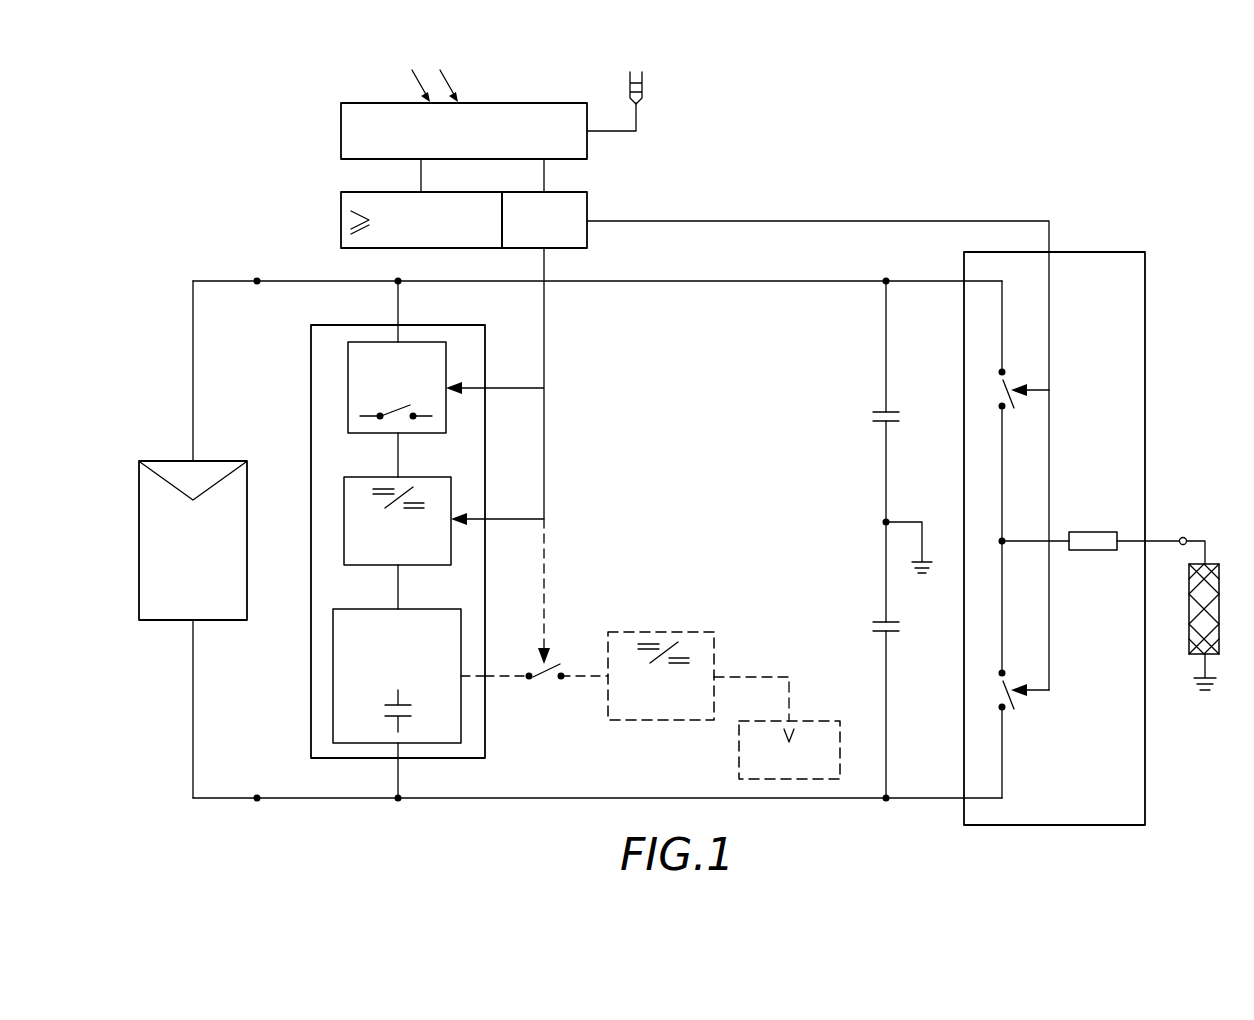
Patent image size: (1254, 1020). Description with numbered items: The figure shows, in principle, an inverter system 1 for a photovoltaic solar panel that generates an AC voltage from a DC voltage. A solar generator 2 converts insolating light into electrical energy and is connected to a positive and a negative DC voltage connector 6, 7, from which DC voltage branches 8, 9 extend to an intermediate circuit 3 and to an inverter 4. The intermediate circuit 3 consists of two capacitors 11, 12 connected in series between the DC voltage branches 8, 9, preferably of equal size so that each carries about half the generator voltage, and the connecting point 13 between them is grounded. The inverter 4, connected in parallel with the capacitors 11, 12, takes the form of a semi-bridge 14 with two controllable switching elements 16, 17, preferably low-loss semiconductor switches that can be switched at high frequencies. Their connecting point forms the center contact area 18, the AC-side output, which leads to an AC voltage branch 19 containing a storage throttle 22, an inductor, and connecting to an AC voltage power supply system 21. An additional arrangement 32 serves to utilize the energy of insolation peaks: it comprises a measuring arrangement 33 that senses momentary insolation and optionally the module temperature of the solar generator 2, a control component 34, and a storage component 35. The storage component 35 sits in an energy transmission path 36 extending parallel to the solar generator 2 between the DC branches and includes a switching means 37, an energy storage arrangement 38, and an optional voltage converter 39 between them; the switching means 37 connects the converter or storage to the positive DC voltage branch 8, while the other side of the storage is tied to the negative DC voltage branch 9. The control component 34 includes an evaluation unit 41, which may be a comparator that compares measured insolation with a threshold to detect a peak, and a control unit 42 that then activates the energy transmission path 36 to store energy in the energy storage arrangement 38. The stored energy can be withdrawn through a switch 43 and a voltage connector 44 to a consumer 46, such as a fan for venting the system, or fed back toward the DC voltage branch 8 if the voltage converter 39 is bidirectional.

The inverter system 1 is at (190, 248).
The solar generator 2 is at (148, 442).
The intermediate circuit 3 is at (820, 392).
The inverter 4 is at (1080, 342).
The positive DC voltage connector 6 is at (257, 281).
The negative DC voltage connector 7 is at (257, 798).
The positive DC voltage branch 8 is at (312, 281).
The negative DC voltage branch 9 is at (296, 798).
The capacitor 11 is at (894, 411).
The capacitor 12 is at (894, 621).
The connecting point 13 is at (886, 522).
The semi-bridge 14 is at (982, 697).
The switching element 16 is at (1008, 386).
The switching element 17 is at (1008, 686).
The center contact area 18 is at (1002, 541).
The AC voltage branch 19 is at (1167, 541).
The AC voltage power supply system 21 is at (1219, 590).
The storage throttle 22 is at (1090, 550).
The additional arrangement 32 is at (296, 214).
The measuring arrangement 33 is at (357, 192).
The control component 34 is at (602, 174).
The storage component 35 is at (292, 436).
The energy transmission path 36 is at (398, 307).
The switching means 37 is at (430, 342).
The energy storage arrangement 38 is at (424, 609).
The voltage converter 39 is at (424, 477).
The evaluation unit 41 is at (501, 114).
The control unit 42 is at (587, 235).
The switch 43 is at (542, 680).
The voltage connector 44 is at (683, 632).
The consumer 46 is at (810, 721).